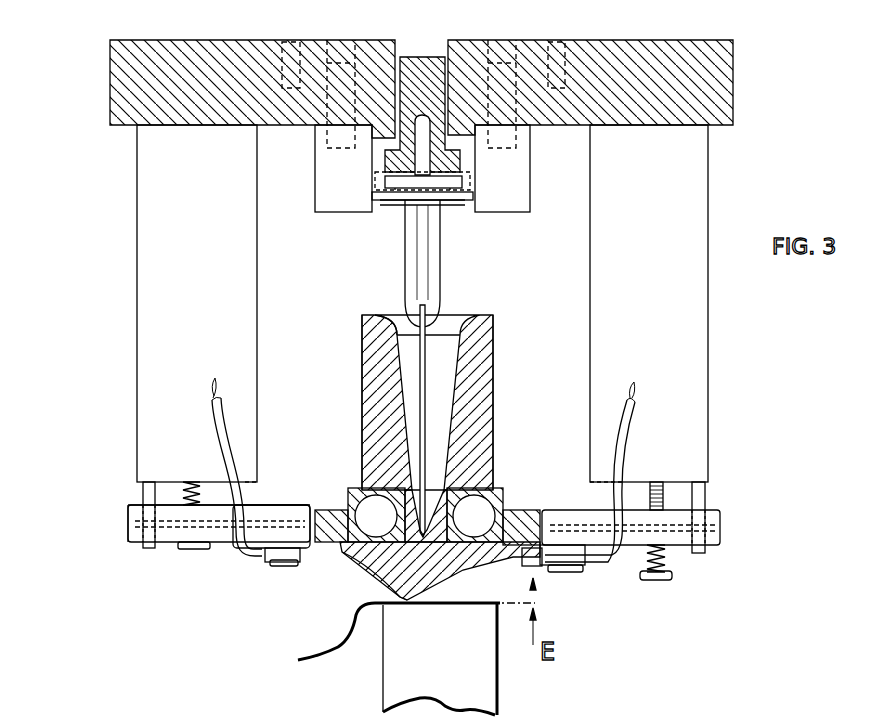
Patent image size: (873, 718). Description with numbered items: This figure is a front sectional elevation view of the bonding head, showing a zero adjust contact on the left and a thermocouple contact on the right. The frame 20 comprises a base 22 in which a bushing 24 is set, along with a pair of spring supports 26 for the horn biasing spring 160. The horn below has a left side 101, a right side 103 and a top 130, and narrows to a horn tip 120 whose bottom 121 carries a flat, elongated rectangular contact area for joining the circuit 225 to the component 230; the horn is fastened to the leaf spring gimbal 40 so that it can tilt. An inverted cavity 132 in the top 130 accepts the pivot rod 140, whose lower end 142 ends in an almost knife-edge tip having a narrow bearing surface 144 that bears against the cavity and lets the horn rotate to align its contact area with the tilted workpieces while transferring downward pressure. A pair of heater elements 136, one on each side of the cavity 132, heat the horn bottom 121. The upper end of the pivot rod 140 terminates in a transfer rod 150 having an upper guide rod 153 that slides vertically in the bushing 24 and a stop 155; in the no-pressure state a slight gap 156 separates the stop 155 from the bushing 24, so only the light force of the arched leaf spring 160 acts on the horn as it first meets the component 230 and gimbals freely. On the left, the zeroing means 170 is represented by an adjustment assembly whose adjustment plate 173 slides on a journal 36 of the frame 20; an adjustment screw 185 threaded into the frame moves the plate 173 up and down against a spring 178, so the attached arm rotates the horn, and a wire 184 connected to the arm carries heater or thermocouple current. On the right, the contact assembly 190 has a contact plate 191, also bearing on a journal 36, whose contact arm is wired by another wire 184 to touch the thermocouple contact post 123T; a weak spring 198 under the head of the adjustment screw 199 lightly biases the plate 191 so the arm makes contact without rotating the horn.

The frame 20 is at (118, 152).
The base 22 is at (120, 90).
The bushing 24 is at (472, 135).
The spring supports 26 is at (325, 160).
The journal 36 is at (141, 497).
The leaf spring gimbal 40 is at (177, 534).
The left side 101 is at (357, 353).
The right side 103 is at (498, 424).
The horn tip 120 is at (389, 583).
The bottom 121 is at (400, 598).
The thermocouple contact post 123T is at (330, 543).
The top 130 is at (507, 323).
The inverted cavity 132 is at (467, 308).
The heater elements 136 is at (355, 487).
The pivot rod 140 is at (396, 256).
The lower end 142 is at (426, 364).
The bearing surface 144 is at (423, 540).
The transfer rod 150 is at (440, 57).
The upper guide rod 153 is at (410, 57).
The stop 155 is at (475, 196).
The gap 156 is at (390, 143).
The horn biasing spring 160 is at (460, 205).
The zeroing means 170 is at (110, 533).
The adjustment plate 173 is at (127, 548).
The spring 178 is at (190, 485).
The wire 184 is at (217, 423).
The adjustment screw 185 is at (197, 553).
The contact assembly 190 is at (745, 537).
The contact plate 191 is at (680, 548).
The weak spring 198 is at (646, 566).
The adjustment screw 199 is at (660, 583).
The circuit 225 is at (310, 665).
The component 230 is at (488, 678).